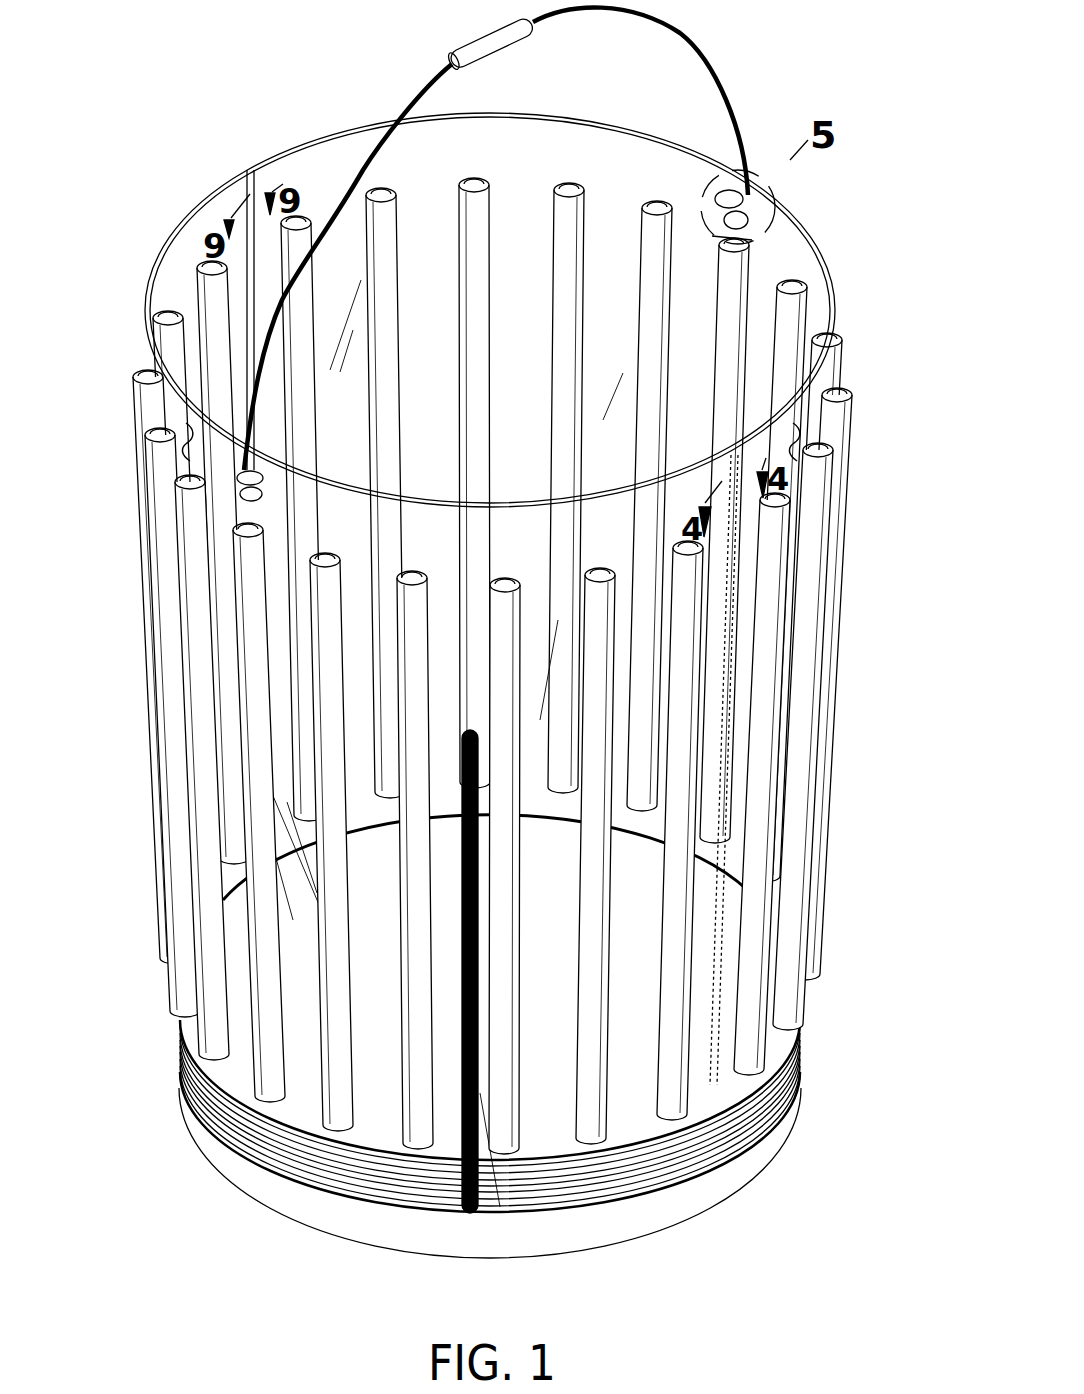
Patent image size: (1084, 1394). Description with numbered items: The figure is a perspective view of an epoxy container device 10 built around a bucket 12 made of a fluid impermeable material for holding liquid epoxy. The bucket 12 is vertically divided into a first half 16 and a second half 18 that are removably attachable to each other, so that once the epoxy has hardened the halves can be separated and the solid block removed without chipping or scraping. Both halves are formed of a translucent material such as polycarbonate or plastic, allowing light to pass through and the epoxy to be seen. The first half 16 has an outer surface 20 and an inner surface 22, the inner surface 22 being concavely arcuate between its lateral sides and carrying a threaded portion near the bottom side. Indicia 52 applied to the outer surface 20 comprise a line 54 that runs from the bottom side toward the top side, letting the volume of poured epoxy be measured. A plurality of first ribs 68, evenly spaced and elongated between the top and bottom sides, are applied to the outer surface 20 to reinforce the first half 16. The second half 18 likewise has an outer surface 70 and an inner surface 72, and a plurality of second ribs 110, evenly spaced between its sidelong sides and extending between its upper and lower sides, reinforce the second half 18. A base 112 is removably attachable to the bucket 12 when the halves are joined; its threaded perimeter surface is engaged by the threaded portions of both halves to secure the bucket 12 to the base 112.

The epoxy container device 10 is at (152, 130).
The bucket 12 is at (105, 312).
The first half 16 is at (140, 233).
The second half 18 is at (850, 233).
The outer surface 20 is at (183, 437).
The inner surface 22 is at (238, 208).
The indicia 52 is at (428, 1092).
The line 54 is at (478, 1003).
The first ribs 68 is at (160, 630).
The outer surface 70 is at (797, 437).
The inner surface 72 is at (615, 155).
The second ribs 110 is at (847, 516).
The base 112 is at (737, 1180).